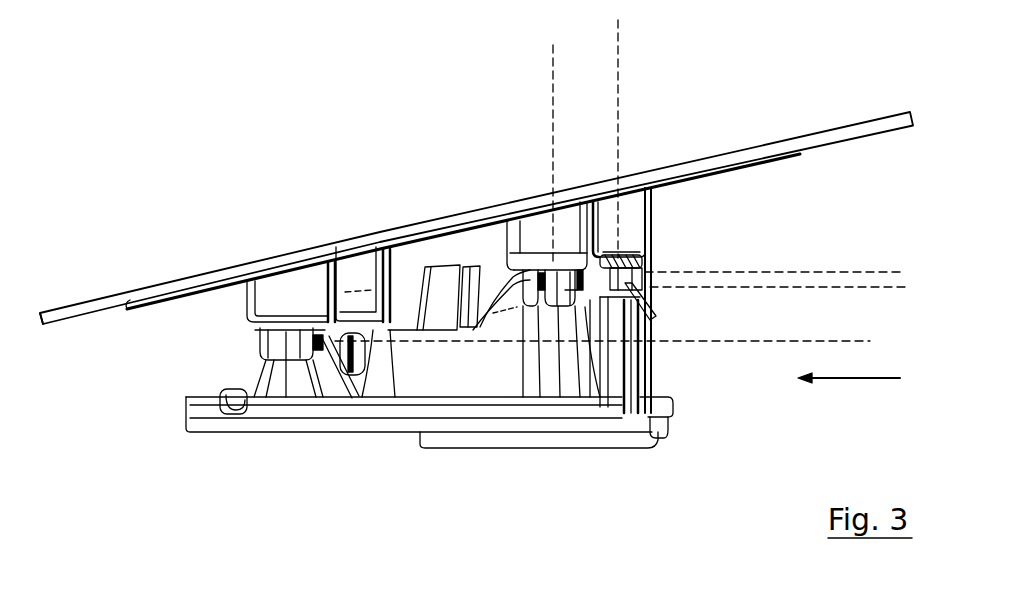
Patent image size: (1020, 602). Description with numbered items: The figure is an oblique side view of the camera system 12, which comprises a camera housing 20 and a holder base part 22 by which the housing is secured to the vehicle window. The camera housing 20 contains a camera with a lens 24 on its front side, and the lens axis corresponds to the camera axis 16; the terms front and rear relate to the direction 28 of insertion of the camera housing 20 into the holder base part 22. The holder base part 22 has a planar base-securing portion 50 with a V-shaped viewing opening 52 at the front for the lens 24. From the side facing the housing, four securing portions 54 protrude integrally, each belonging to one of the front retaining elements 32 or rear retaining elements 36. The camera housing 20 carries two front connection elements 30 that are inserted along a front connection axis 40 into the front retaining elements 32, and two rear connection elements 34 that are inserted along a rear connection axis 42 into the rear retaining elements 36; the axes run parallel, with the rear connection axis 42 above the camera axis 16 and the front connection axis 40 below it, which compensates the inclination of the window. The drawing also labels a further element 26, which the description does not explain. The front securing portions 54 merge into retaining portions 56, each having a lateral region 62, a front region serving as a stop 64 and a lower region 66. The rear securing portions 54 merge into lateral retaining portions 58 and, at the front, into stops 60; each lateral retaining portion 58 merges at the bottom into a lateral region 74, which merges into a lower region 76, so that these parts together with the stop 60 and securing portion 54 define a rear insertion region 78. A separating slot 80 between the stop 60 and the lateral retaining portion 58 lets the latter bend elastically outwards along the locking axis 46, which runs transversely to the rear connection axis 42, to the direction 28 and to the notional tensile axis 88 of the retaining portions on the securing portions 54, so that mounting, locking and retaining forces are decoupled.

The camera system 12 is at (116, 195).
The camera axis 16 is at (384, 234).
The camera housing 20 is at (404, 445).
The holder base part 22 is at (832, 122).
The lens 24 is at (445, 283).
The post 26 is at (645, 393).
The direction of insertion 28 is at (875, 380).
The front connection element 30 is at (321, 362).
The front retaining element 32 is at (356, 258).
The rear connection element 34 is at (653, 340).
The rear retaining element 36 is at (571, 215).
The front connection axis 40 is at (738, 343).
The rear connection axis 42 is at (850, 288).
The locking axis 46 is at (498, 320).
The base-securing portion 50 is at (708, 152).
The viewing opening 52 is at (91, 322).
The securing portion 54 is at (262, 280).
The retaining portion 56 is at (270, 378).
The lateral retaining portion 58 is at (570, 310).
The stop 60 is at (525, 360).
The lateral region 62 is at (290, 362).
The stop 64 is at (255, 338).
The lower region 66 is at (288, 362).
The lateral region 74 is at (658, 283).
The lower region 76 is at (585, 312).
The rear insertion region 78 is at (644, 262).
The separating slot 80 is at (548, 360).
The tensile axis 88 is at (617, 36).